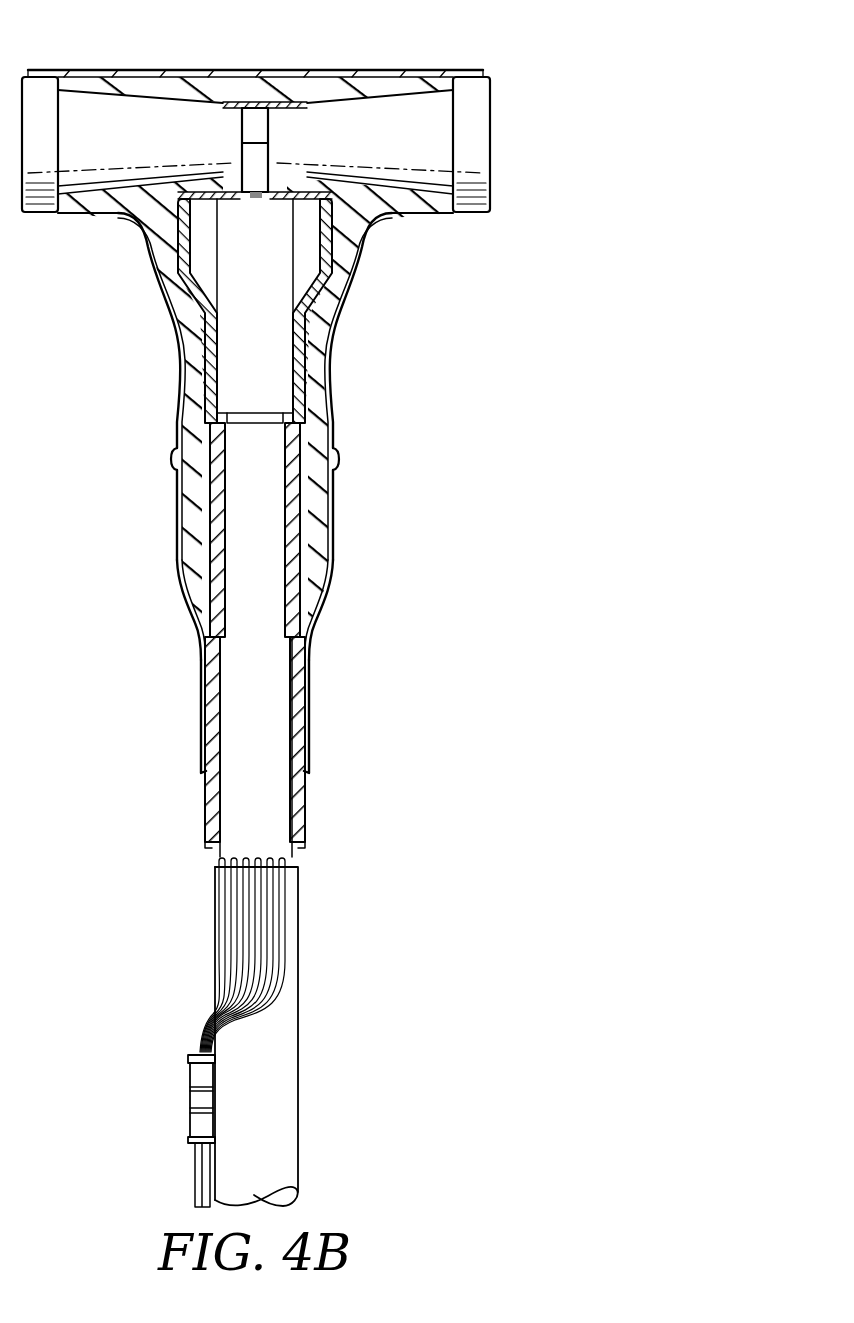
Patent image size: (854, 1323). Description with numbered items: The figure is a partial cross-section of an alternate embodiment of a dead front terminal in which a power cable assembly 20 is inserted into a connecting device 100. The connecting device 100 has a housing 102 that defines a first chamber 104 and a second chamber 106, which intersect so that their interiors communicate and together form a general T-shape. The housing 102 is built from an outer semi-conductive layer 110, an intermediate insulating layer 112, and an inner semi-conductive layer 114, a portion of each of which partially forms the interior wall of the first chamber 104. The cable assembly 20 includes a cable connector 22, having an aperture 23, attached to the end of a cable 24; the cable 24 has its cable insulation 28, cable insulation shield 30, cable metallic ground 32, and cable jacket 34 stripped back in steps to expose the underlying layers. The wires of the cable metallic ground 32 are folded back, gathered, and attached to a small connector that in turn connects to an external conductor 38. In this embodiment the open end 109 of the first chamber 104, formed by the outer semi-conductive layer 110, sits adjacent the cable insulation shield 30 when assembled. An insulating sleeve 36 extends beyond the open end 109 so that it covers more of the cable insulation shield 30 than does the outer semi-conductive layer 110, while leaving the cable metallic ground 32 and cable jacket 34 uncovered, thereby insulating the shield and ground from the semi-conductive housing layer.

The connecting device 100 is at (469, 41).
The housing 102 is at (333, 88).
The second chamber 106 is at (114, 86).
The aperture 23 is at (240, 130).
The first chamber 104 is at (303, 258).
The intermediate insulating layer 112 is at (186, 363).
The inner semi-conductive layer 114 is at (301, 367).
The cable connector 22 is at (281, 318).
The insulating sleeve 36 is at (212, 468).
The cable insulation 28 is at (237, 507).
The power cable assembly 20 is at (197, 589).
The outer semi-conductive layer 110 is at (313, 652).
The open end 109 is at (311, 777).
The cable insulation shield 30 is at (230, 813).
The cable metallic ground 32 is at (238, 882).
The cable jacket 34 is at (285, 1013).
The cable 24 is at (314, 1098).
The external conductor 38 is at (200, 1167).